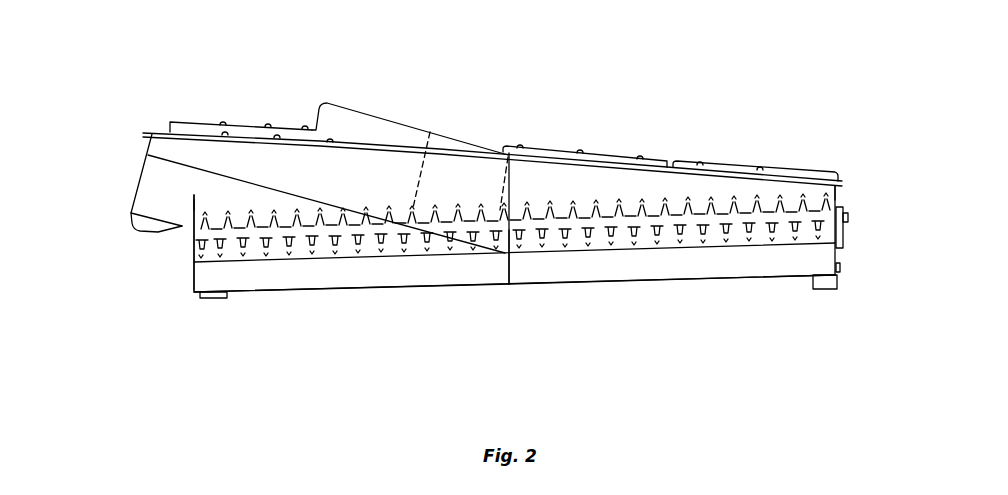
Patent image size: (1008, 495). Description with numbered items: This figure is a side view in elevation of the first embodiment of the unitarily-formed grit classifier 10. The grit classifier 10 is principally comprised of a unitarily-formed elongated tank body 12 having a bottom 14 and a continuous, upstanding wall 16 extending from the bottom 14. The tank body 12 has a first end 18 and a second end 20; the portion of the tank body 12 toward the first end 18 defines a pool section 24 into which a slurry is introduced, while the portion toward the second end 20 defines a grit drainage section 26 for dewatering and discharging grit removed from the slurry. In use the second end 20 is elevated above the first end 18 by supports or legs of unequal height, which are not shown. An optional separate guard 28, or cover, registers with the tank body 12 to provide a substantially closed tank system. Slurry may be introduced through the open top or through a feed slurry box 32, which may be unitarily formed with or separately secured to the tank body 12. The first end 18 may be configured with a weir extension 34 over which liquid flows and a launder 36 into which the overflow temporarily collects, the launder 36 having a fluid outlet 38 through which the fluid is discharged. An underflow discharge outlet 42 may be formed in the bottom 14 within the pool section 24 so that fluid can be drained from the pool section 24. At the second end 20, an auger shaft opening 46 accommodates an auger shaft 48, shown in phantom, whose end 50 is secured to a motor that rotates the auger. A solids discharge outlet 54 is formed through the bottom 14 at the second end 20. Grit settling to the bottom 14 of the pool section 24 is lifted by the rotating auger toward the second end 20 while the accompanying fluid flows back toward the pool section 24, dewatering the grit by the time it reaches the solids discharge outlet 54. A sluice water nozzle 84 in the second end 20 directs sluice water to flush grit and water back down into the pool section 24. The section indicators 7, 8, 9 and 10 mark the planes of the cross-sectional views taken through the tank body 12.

The section line 7- 7 is at (265, 107).
The section line 8- 8 is at (475, 128).
The section line 9- 9 is at (605, 142).
The grit classifier 10 is at (488, 200).
The elongated tank body 12 is at (552, 178).
The bottom 14 is at (395, 292).
The continuous, upstanding wall 16 is at (392, 163).
The first end 18 is at (194, 248).
The second end 20 is at (838, 190).
The pool section 24 is at (332, 310).
The grit drainage section 26 is at (703, 310).
The guard 28 is at (338, 118).
The feed slurry box 32 is at (494, 172).
The weir extension 34 is at (190, 198).
The launder 36 is at (153, 175).
The fluid outlet 38 is at (133, 232).
The underflow discharge outlet 42 is at (212, 298).
The auger shaft opening 46 is at (843, 207).
The auger shaft 48 is at (553, 228).
The end of the auger shaft 50 is at (850, 217).
The solids discharge outlet 54 is at (832, 285).
The sluice water nozzle 84 is at (842, 267).